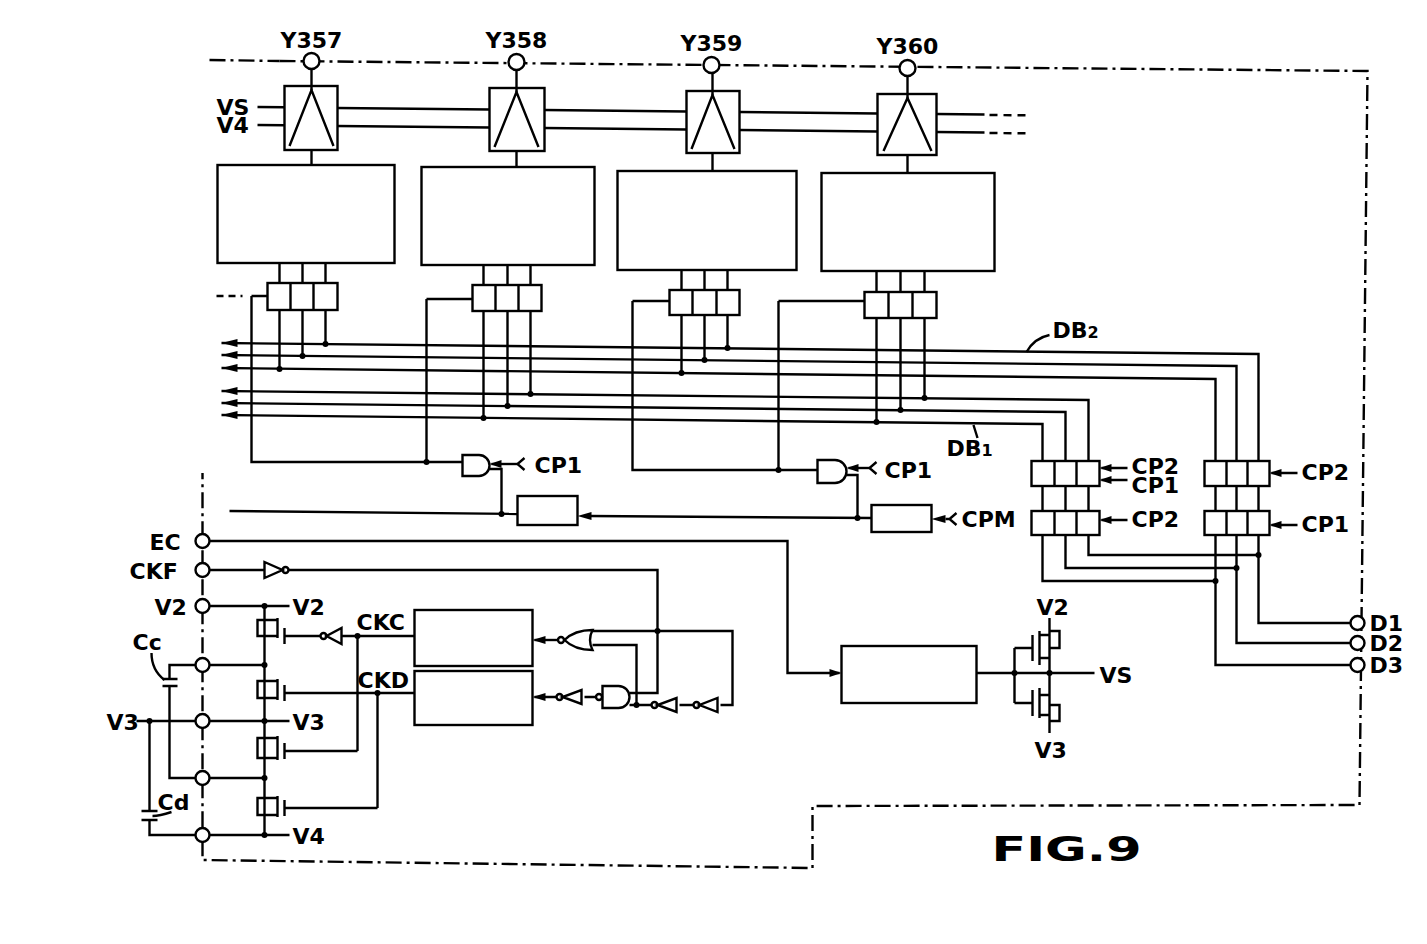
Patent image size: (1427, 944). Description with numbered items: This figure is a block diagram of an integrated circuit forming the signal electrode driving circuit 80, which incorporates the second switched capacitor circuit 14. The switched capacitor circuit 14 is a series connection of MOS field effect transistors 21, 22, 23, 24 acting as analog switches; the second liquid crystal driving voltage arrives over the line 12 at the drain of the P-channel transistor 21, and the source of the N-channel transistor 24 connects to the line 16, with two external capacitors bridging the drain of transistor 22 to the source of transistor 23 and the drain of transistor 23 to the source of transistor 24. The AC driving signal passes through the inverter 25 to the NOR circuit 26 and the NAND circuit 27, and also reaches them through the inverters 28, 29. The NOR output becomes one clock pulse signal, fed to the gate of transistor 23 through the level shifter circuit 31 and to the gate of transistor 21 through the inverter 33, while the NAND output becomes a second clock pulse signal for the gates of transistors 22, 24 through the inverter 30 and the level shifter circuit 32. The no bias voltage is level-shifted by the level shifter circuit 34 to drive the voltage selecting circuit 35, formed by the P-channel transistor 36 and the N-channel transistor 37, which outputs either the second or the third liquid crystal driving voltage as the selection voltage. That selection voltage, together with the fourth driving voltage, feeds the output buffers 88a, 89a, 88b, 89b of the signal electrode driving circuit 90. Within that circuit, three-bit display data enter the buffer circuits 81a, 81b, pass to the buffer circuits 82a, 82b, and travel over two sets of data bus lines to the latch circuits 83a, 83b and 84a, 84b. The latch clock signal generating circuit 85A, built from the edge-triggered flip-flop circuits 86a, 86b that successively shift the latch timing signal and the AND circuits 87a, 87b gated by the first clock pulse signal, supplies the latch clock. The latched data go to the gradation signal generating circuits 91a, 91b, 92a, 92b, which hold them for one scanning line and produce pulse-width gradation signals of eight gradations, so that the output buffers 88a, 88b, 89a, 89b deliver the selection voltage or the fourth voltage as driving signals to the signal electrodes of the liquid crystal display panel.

The signal electrode driving circuit 80 is at (1232, 73).
The signal electrode driving circuit 90 is at (234, 80).
The output buffer 89b is at (340, 99).
The output buffer 88b is at (547, 101).
The output buffer 89a is at (742, 104).
The output buffer 88a is at (939, 107).
The gradation signal generating circuit 92b is at (347, 168).
The gradation signal generating circuit 91b is at (552, 170).
The gradation signal generating circuit 92a is at (754, 174).
The gradation signal generating circuit 91a is at (995, 188).
The latch circuit 84b is at (338, 300).
The latch circuit 83b is at (543, 302).
The latch circuit 84a is at (742, 306).
The latch circuit 83a is at (939, 308).
The AND circuit 87b is at (477, 479).
The AND circuit 87a is at (830, 454).
The flip-flop circuit 86b is at (582, 527).
The flip-flop circuit 86a is at (906, 534).
The latch clock signal generating circuit 85A is at (748, 518).
The buffer circuit 82a is at (1032, 474).
The buffer circuit 81a is at (1040, 538).
The buffer circuit 82b is at (1218, 463).
The buffer circuit 81b is at (1268, 538).
The inverter 25 is at (279, 560).
The line 12 is at (225, 608).
The line 16 is at (224, 836).
The second switched capacitor circuit 14 is at (365, 765).
The MOS field effect transistor 21 is at (294, 650).
The MOS field effect transistor 22 is at (292, 690).
The MOS field effect transistor 23 is at (298, 758).
The MOS field effect transistor 24 is at (298, 805).
The inverter 33 is at (335, 628).
The level shifter circuit 31 is at (485, 613).
The level shifter circuit 32 is at (497, 728).
The NOR circuit 26 is at (578, 631).
The NAND circuit 27 is at (612, 711).
The inverter 28 is at (712, 713).
The inverter 29 is at (668, 713).
The inverter 30 is at (568, 711).
The level shifter circuit 34 is at (897, 706).
The voltage selecting circuit 35 is at (1062, 665).
The P-channel MOS field effect transistor 36 is at (1030, 640).
The N-channel MOS field effect transistor 37 is at (1030, 712).